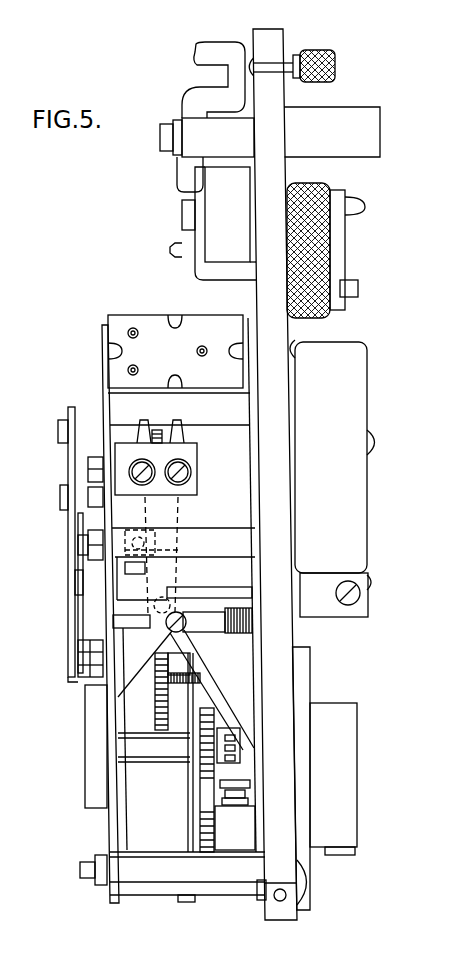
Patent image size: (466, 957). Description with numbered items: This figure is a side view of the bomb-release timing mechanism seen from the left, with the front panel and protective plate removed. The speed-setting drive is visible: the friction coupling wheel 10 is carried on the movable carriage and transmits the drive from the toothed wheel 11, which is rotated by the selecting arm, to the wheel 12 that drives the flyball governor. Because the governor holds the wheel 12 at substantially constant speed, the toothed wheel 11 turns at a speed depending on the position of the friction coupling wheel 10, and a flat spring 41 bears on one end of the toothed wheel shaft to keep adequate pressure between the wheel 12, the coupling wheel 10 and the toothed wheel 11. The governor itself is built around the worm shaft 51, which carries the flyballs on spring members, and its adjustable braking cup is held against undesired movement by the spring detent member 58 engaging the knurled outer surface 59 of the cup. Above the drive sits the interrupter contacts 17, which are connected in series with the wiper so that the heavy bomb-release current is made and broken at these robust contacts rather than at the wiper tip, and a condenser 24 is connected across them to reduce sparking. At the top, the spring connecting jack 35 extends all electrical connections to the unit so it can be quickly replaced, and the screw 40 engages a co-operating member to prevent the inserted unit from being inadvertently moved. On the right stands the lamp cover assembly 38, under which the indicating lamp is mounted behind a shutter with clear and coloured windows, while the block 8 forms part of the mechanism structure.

The casing block 8 is at (342, 784).
The friction coupling wheel 10 is at (197, 674).
The toothed wheel 11 is at (155, 706).
The wheel 12 is at (212, 765).
The interrupter contacts 17 is at (167, 509).
The condenser 24 is at (158, 322).
The spring connecting jack 35 is at (210, 47).
The lamp cover assembly 38 is at (306, 258).
The screw 40 is at (322, 50).
The flat spring 41 is at (75, 588).
The worm shaft 51 is at (240, 733).
The spring detent member 58 is at (205, 626).
The knurled outer surface 59 is at (253, 613).